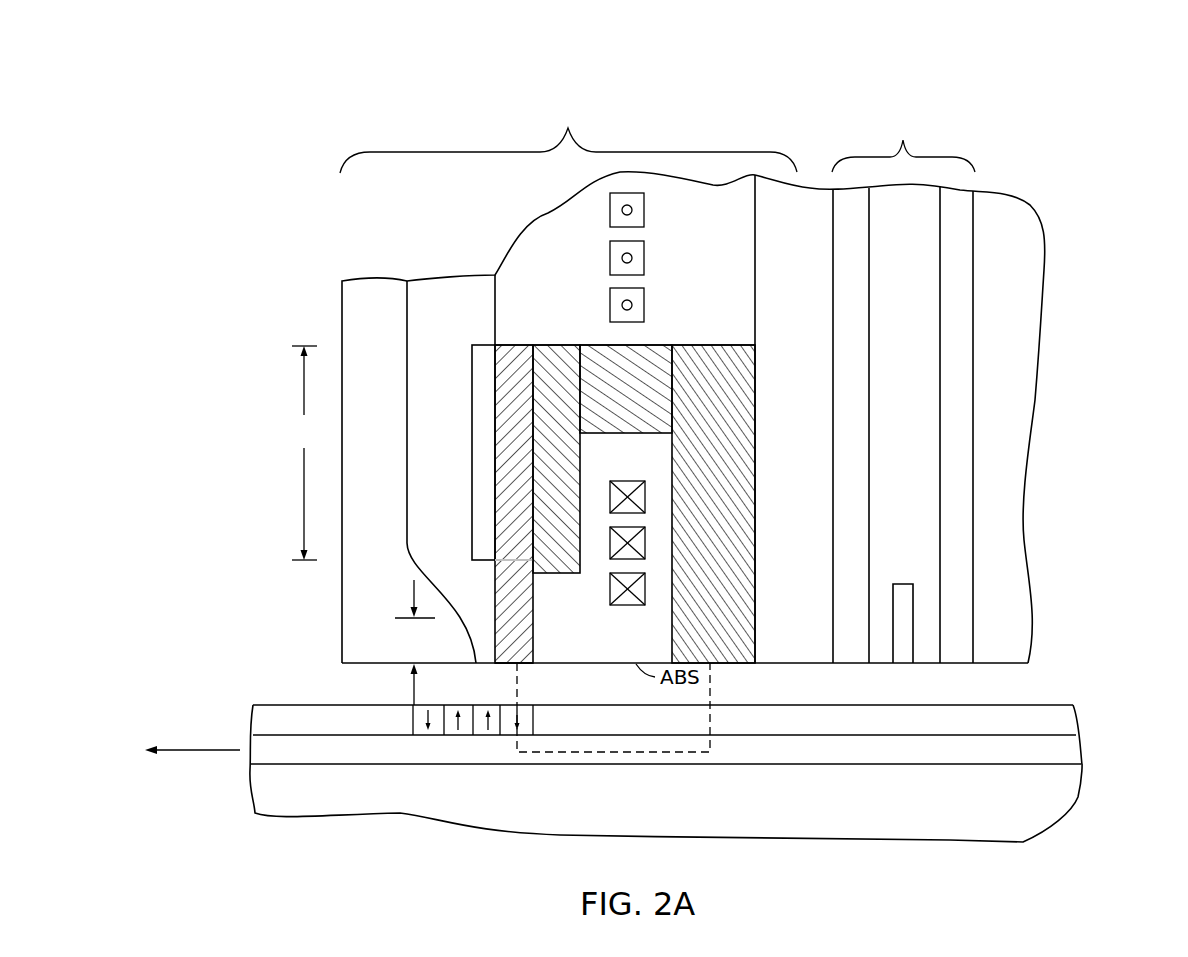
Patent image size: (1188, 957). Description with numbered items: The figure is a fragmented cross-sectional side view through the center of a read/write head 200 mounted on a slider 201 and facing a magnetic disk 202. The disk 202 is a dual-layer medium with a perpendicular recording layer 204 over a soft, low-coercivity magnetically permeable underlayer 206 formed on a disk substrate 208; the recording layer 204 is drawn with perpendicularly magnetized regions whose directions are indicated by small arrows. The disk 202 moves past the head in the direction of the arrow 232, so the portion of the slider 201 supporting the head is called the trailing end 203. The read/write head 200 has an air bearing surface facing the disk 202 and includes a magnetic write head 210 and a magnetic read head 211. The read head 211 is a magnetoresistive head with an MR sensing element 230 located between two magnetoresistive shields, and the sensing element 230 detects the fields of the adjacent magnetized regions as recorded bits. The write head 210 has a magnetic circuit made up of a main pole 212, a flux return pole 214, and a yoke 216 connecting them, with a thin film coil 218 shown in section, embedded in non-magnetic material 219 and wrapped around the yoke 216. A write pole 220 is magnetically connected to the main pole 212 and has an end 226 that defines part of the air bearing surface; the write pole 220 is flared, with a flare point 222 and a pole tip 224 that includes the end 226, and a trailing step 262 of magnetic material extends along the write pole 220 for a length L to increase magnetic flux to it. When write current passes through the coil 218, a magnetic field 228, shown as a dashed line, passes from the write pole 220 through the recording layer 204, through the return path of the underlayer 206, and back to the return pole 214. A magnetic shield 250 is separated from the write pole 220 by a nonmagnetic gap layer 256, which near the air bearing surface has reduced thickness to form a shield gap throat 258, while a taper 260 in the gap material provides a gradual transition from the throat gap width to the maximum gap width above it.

The read/write head 200 is at (272, 125).
The slider 201 is at (1030, 432).
The magnetic disk 202 is at (1079, 832).
The trailing end 203 is at (277, 462).
The recording layer 204 is at (1062, 722).
The magnetically permeable underlayer 206 is at (1063, 757).
The disk substrate 208 is at (1070, 790).
The magnetic write head 210 is at (568, 134).
The magnetic read head 211 is at (903, 139).
The main pole 212 is at (572, 469).
The flux return pole 214 is at (742, 476).
The yoke 216 is at (665, 345).
The thin film coil 218 is at (660, 193).
The non-magnetic material 219 is at (582, 279).
The write pole 220 is at (527, 345).
The flare point 222 is at (508, 562).
The pole tip 224 is at (520, 650).
The end of the write pole 226 is at (518, 665).
The magnetic field 228 is at (712, 665).
The MR sensing element 230 is at (903, 657).
The arrow 232 is at (193, 751).
The magnetic shield 250 is at (366, 631).
The nonmagnetic gap layer 256 is at (452, 322).
The shield gap throat 258 is at (477, 603).
The taper 260 is at (437, 600).
The trailing step 262 is at (472, 385).